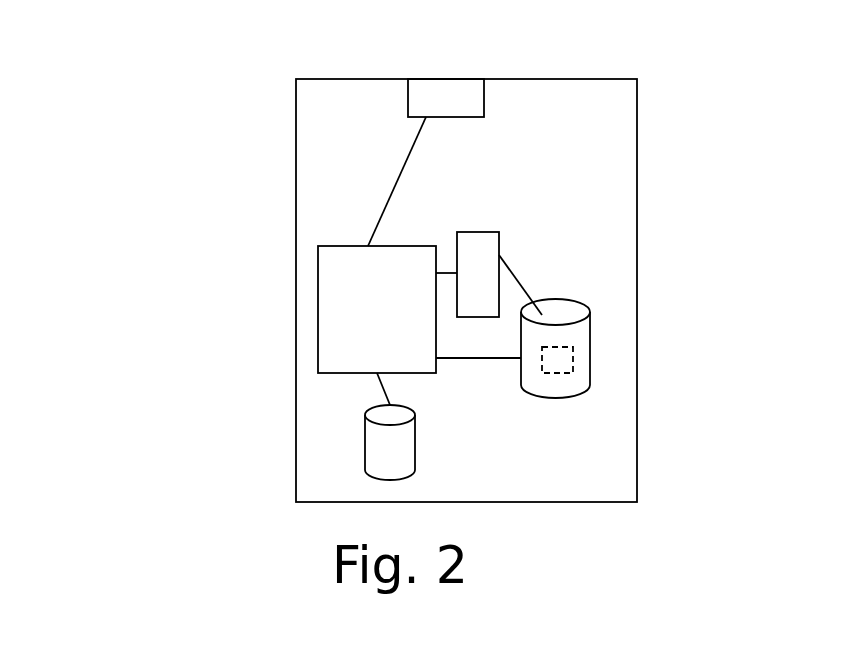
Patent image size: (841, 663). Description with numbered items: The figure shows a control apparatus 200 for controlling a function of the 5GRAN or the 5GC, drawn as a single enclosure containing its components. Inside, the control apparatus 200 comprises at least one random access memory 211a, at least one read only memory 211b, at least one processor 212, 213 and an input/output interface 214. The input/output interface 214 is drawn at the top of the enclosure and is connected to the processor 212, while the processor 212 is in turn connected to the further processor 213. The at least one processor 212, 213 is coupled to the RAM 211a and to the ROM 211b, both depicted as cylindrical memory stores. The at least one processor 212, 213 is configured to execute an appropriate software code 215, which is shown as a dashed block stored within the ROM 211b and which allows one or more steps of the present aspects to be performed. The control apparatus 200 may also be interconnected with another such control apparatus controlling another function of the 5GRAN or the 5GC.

The control apparatus 200 is at (276, 72).
The input/output interface 214 is at (452, 98).
The processor 213 is at (468, 252).
The processor 212 is at (318, 337).
The random access memory (RAM) 211a is at (365, 442).
The read only memory (ROM) 211b is at (590, 378).
The software code 215 is at (570, 348).